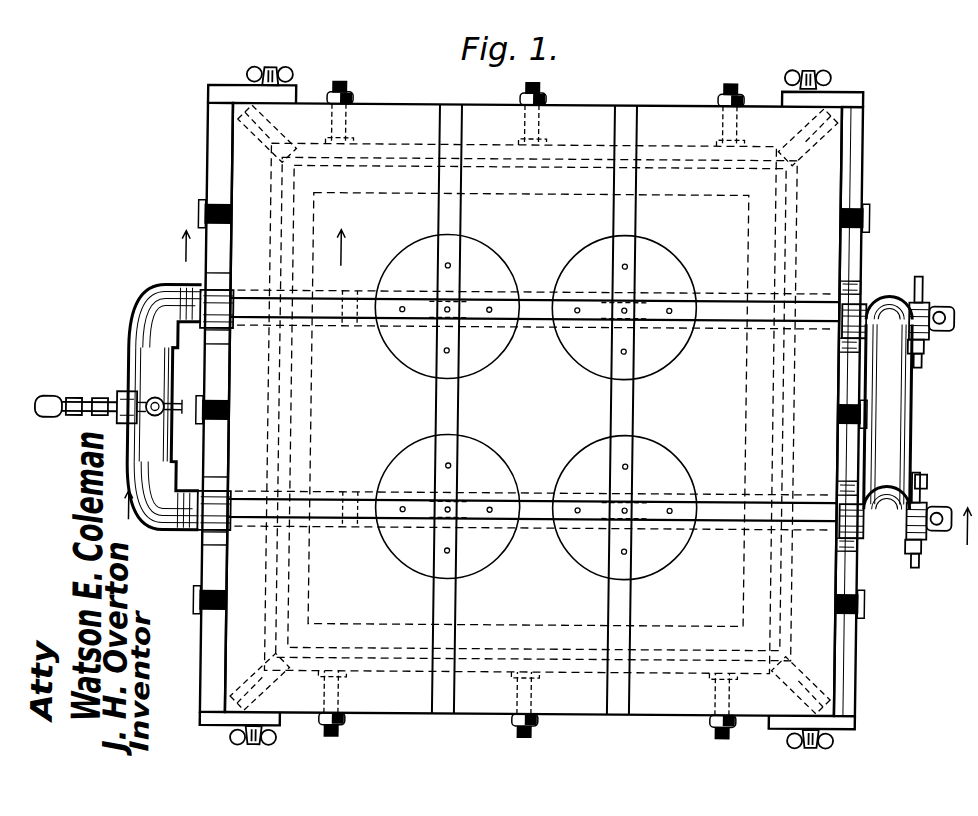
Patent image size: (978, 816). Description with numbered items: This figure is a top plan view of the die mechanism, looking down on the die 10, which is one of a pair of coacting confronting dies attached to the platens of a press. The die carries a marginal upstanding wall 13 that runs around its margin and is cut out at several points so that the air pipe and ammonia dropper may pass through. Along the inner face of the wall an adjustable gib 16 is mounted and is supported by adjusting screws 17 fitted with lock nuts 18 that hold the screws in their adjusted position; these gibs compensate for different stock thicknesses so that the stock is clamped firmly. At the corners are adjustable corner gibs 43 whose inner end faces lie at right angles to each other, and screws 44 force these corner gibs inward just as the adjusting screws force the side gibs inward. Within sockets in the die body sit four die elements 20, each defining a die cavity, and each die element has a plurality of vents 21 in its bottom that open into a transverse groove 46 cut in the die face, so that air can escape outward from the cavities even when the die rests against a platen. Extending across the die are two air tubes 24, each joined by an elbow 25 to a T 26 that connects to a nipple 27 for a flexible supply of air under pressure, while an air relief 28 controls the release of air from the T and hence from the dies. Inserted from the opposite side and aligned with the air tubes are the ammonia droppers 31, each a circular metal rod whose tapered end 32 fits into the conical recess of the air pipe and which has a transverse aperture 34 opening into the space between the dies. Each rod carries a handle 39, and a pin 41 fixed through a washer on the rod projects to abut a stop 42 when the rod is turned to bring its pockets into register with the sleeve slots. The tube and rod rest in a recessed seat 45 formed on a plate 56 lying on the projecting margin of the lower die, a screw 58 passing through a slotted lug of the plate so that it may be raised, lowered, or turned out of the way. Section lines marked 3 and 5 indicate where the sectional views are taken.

The section line 3- 3 is at (547, 517).
The section line 5- 5 is at (265, 247).
The die 10 is at (662, 103).
The marginal upstanding wall 13 is at (540, 623).
The adjustable gib 16 is at (565, 150).
The adjusting screws 17 is at (726, 88).
The lock nuts 18 is at (203, 200).
The die element 20 is at (478, 250).
The vents 21 is at (405, 312).
The air tube 24 is at (333, 330).
The elbow 25 is at (160, 292).
The T 26 is at (124, 392).
The nipple 27 is at (57, 397).
The air relief 28 is at (172, 396).
The ammonia dropper 31 is at (536, 326).
The tapered end 32 is at (352, 290).
The transverse aperture 34 is at (398, 300).
The handle 39 is at (946, 300).
The pin 41 is at (922, 272).
The stop 42 is at (924, 350).
The adjustable corner gibs 43 is at (282, 118).
The screws 44 is at (240, 128).
The seat 45 is at (206, 290).
The transverse groove 46 is at (714, 292).
The plate 56 is at (860, 250).
The screw 58 is at (803, 90).